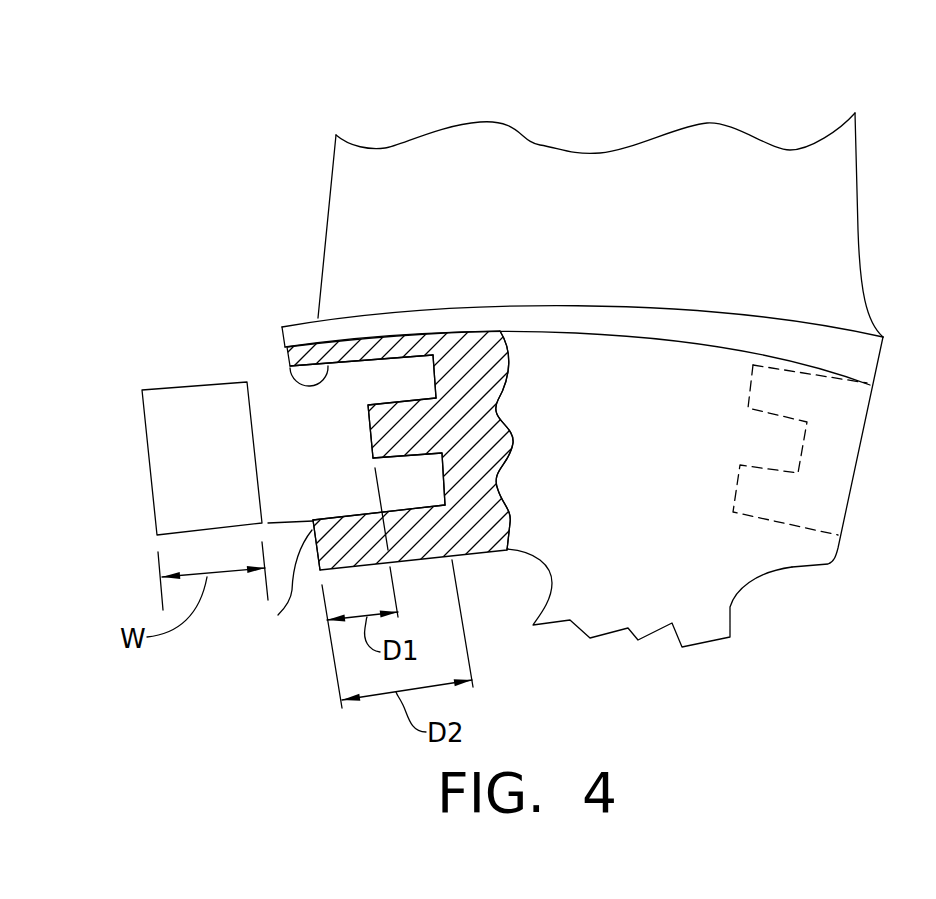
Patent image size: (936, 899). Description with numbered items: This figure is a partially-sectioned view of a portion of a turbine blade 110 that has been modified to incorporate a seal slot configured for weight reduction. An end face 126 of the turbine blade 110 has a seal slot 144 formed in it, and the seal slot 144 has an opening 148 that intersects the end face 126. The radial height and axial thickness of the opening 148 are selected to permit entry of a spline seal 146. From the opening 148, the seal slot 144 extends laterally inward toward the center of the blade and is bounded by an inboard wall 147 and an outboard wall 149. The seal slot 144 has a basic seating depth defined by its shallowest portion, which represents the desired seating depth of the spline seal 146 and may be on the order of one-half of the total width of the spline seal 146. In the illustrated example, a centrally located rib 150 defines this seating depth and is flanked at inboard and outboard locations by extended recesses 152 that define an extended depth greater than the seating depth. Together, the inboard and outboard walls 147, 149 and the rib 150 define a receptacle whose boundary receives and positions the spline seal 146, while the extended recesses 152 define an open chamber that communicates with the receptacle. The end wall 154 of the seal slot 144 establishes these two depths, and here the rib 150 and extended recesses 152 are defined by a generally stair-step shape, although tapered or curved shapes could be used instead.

The turbine blade 110 is at (650, 68).
The end face 126 is at (282, 340).
The seal slot 144 is at (267, 402).
The spline seal 146 is at (228, 470).
The inboard wall 147 is at (350, 512).
The opening 148 is at (313, 521).
The outboard wall 149 is at (288, 370).
The rib 150 is at (368, 443).
The extended recesses 152 is at (420, 393).
The end wall 154 is at (455, 420).